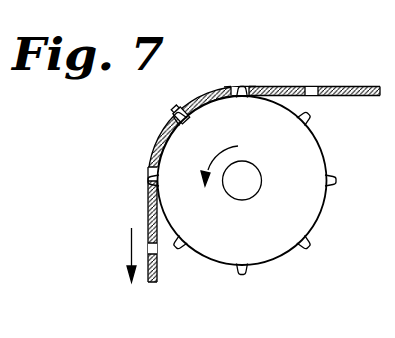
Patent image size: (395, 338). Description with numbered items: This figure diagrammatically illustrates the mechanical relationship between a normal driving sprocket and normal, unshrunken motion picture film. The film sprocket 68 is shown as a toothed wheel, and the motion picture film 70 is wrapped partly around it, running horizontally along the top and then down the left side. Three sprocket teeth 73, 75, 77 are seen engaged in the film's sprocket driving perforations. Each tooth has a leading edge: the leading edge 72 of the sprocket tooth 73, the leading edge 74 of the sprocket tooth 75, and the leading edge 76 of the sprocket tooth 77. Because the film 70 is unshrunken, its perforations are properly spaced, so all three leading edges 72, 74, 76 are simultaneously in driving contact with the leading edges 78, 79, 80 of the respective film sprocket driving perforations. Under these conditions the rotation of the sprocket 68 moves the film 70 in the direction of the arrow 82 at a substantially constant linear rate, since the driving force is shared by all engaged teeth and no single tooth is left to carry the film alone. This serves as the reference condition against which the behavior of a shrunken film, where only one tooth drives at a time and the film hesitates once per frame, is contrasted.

The film sprocket 68 is at (323, 155).
The motion picture film 70 is at (328, 86).
The leading edge of sprocket tooth 72 is at (150, 180).
The sprocket tooth 73 is at (150, 170).
The leading edge of sprocket tooth 74 is at (173, 114).
The sprocket tooth 75 is at (176, 108).
The leading edge of sprocket tooth 76 is at (243, 87).
The sprocket tooth 77 is at (250, 87).
The leading edge of film sprocket driving perforation 78 is at (150, 192).
The leading edge of film sprocket driving perforation 79 is at (167, 126).
The leading edge of film sprocket driving perforation 80 is at (236, 87).
The arrow 82 is at (130, 248).